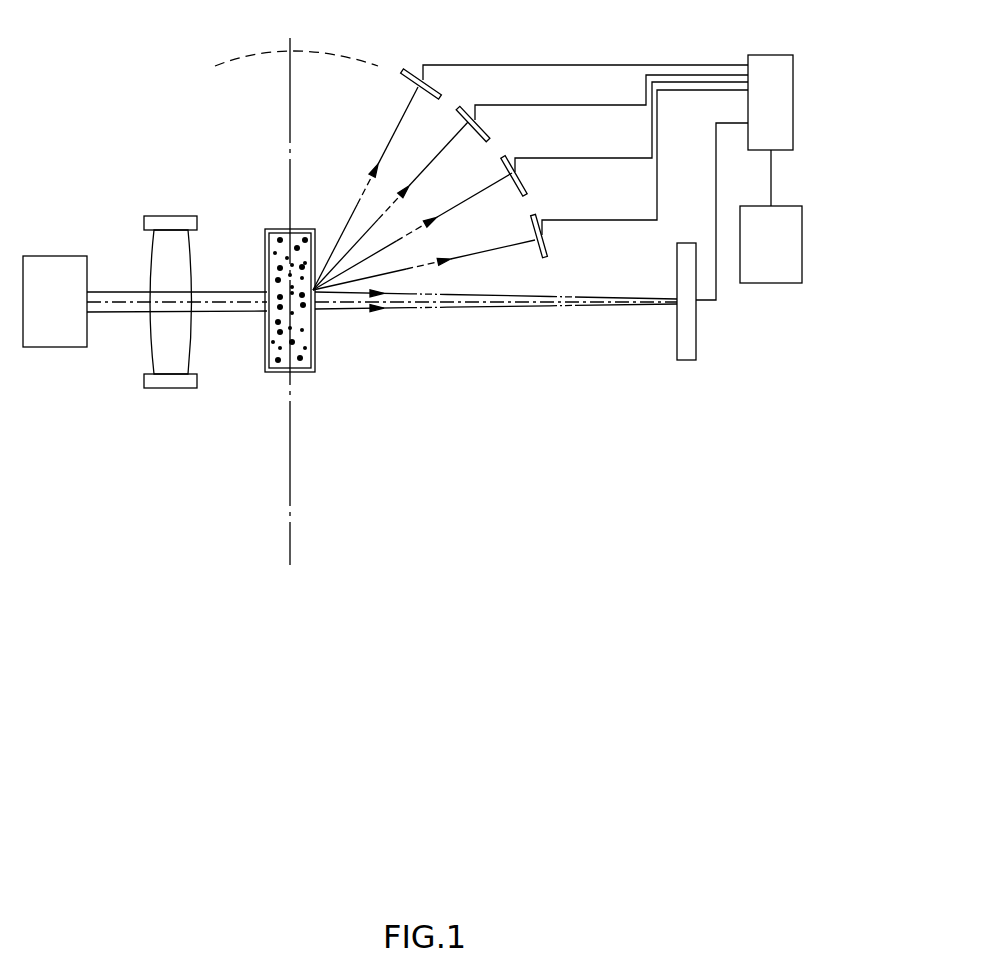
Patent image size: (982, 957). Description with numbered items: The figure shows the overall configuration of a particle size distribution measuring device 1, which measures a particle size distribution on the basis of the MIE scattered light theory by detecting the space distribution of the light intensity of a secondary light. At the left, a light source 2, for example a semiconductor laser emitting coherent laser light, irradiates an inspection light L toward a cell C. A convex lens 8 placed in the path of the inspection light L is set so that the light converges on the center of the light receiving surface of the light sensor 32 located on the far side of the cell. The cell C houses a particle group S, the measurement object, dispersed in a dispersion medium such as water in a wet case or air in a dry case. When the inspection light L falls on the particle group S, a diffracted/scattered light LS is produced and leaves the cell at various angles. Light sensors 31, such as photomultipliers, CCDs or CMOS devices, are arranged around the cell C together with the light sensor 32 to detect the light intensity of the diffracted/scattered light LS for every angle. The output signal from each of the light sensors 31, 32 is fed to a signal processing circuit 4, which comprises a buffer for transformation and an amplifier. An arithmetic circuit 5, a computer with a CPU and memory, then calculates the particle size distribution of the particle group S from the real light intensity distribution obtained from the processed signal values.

The particle size distribution measuring device 1 is at (190, 462).
The light source 2 is at (58, 256).
The convex lens 8 is at (174, 216).
The inspection light L is at (226, 316).
The particle group S is at (277, 236).
The cell C is at (266, 372).
The diffracted/scattered light LS is at (398, 127).
The light sensors 31 is at (443, 89).
The light sensor 32 is at (684, 362).
The signal processing circuit 4 is at (773, 55).
The arithmetic circuit 5 is at (802, 252).